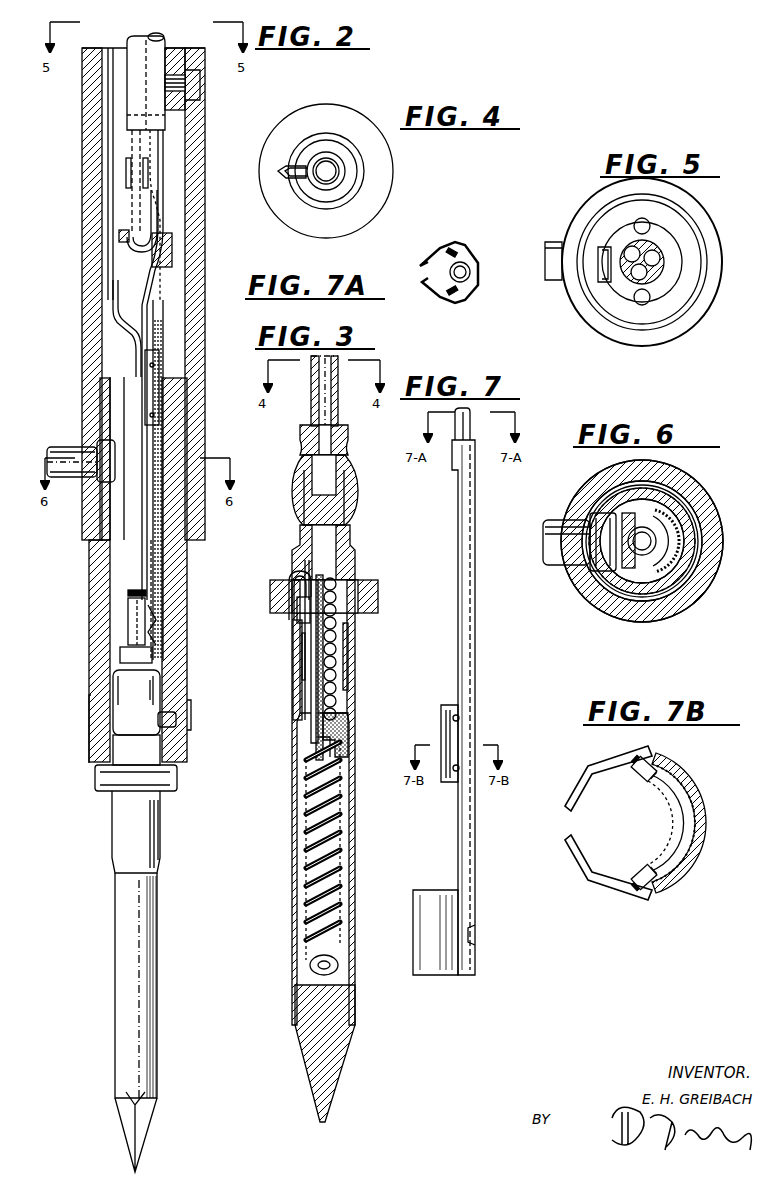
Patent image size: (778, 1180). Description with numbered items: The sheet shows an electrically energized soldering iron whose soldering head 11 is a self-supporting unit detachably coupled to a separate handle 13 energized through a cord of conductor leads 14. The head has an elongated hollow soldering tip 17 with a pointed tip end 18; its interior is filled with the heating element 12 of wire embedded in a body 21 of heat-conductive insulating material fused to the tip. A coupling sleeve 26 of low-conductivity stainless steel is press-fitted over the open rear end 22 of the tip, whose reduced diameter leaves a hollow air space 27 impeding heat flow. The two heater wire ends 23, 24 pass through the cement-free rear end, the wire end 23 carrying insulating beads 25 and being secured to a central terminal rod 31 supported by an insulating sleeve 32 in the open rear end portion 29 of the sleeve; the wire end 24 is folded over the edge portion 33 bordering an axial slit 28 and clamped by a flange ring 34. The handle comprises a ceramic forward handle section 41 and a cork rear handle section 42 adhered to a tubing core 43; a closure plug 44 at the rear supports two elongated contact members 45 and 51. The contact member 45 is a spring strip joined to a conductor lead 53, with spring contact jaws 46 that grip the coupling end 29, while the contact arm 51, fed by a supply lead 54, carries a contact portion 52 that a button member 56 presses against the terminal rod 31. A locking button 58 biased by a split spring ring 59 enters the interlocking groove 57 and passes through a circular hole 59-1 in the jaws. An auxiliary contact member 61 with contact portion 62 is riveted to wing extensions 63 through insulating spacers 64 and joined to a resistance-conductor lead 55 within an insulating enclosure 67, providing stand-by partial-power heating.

In FIG. 2, the soldering head 11 is at (104, 880).
In FIG. 3, the soldering head 11 is at (290, 820).
In FIG. 3, the heating element 12 is at (330, 848).
In FIG. 2, the handle 13 is at (72, 164).
In FIG. 2, the cord of conductor leads 14 is at (138, 34).
In FIG. 5, the cord of conductor leads 14 is at (652, 280).
In FIG. 2, the soldering tip 17 is at (128, 972).
In FIG. 3, the soldering tip 17 is at (296, 926).
In FIG. 2, the pointed tip end 18 is at (126, 1128).
In FIG. 3, the pointed tip end 18 is at (348, 1050).
In FIG. 3, the body of electrical insulating material 21 is at (340, 820).
In FIG. 3, the open rear end of soldering tip 22 is at (300, 640).
In FIG. 3, the heater wire end 23 is at (318, 730).
In FIG. 3, the heater wire end 24 is at (311, 692).
In FIG. 4, the heater wire end 24 is at (288, 165).
In FIG. 3, the insulating beads 25 is at (336, 700).
In FIG. 2, the coupling sleeve 26 is at (112, 826).
In FIG. 3, the coupling sleeve 26 is at (355, 645).
In FIG. 3, the hollow air space 27 is at (302, 668).
In FIG. 3, the axial slit 28 is at (305, 550).
In FIG. 3, the open rear end portion of coupling sleeve 29 is at (358, 488).
In FIG. 4, the open rear end portion of coupling sleeve 29 is at (343, 195).
In FIG. 2, the central terminal rod 31 is at (128, 640).
In FIG. 3, the central terminal rod 31 is at (320, 388).
In FIG. 4, the central terminal rod 31 is at (339, 165).
In FIG. 3, the insulating sleeve 32 is at (348, 440).
In FIG. 4, the insulating sleeve 32 is at (342, 180).
In FIG. 3, the edge portion of coupling sleeve 33 is at (292, 578).
In FIG. 2, the flange ring 34 is at (95, 780).
In FIG. 3, the flange ring 34 is at (378, 600).
In FIG. 4, the flange ring 34 is at (296, 220).
In FIG. 2, the forward handle section 41 is at (89, 598).
In FIG. 6, the forward handle section 41 is at (684, 572).
In FIG. 2, the rear handle section 42 is at (205, 122).
In FIG. 5, the rear handle section 42 is at (700, 215).
In FIG. 6, the rear handle section 42 is at (710, 490).
In FIG. 2, the tubing core 43 is at (112, 346).
In FIG. 2, the closure plug 44 is at (178, 44).
In FIG. 5, the closure plug 44 is at (676, 268).
In FIG. 2, the contact member 45 is at (175, 655).
In FIG. 6, the contact member 45 is at (648, 560).
In FIG. 7, the contact member 45 is at (468, 620).
In FIG. 7B, the contact member 45 is at (700, 826).
In FIG. 2, the spring contact jaws 46 is at (104, 685).
In FIG. 7A, the spring contact jaws 46 is at (425, 260).
In FIG. 7, the spring contact jaws 46 is at (430, 978).
In FIG. 7B, the spring contact jaws 46 is at (578, 786).
In FIG. 2, the contact member 51 is at (108, 288).
In FIG. 5, the contact member 51 is at (600, 265).
In FIG. 6, the contact member 51 is at (630, 572).
In FIG. 2, the contact portion 52 is at (132, 588).
In FIG. 2, the electric conductor lead 53 is at (168, 160).
In FIG. 7A, the electric conductor lead 53 is at (470, 278).
In FIG. 7, the electric conductor lead 53 is at (467, 424).
In FIG. 2, the supply lead 54 is at (122, 232).
In FIG. 2, the resistance-conductor lead 55 is at (148, 312).
In FIG. 2, the button member 56 is at (72, 442).
In FIG. 6, the button member 56 is at (555, 565).
In FIG. 3, the interlocking groove 57 is at (352, 548).
In FIG. 2, the locking button 58 is at (176, 718).
In FIG. 2, the split spring ring 59 is at (88, 718).
In FIG. 7, the circular hole 59-1 is at (475, 935).
In FIG. 2, the auxiliary contact member 61 is at (150, 525).
In FIG. 7B, the auxiliary contact member 61 is at (686, 820).
In FIG. 2, the contact portion 62 is at (156, 622).
In FIG. 2, the wing extensions 63 is at (145, 428).
In FIG. 7A, the wing extensions 63 is at (458, 295).
In FIG. 7B, the wing extensions 63 is at (690, 768).
In FIG. 2, the insulating spacers 64 is at (148, 575).
In FIG. 7B, the insulating spacers 64 is at (690, 794).
In FIG. 2, the insulating enclosure 67 is at (126, 178).